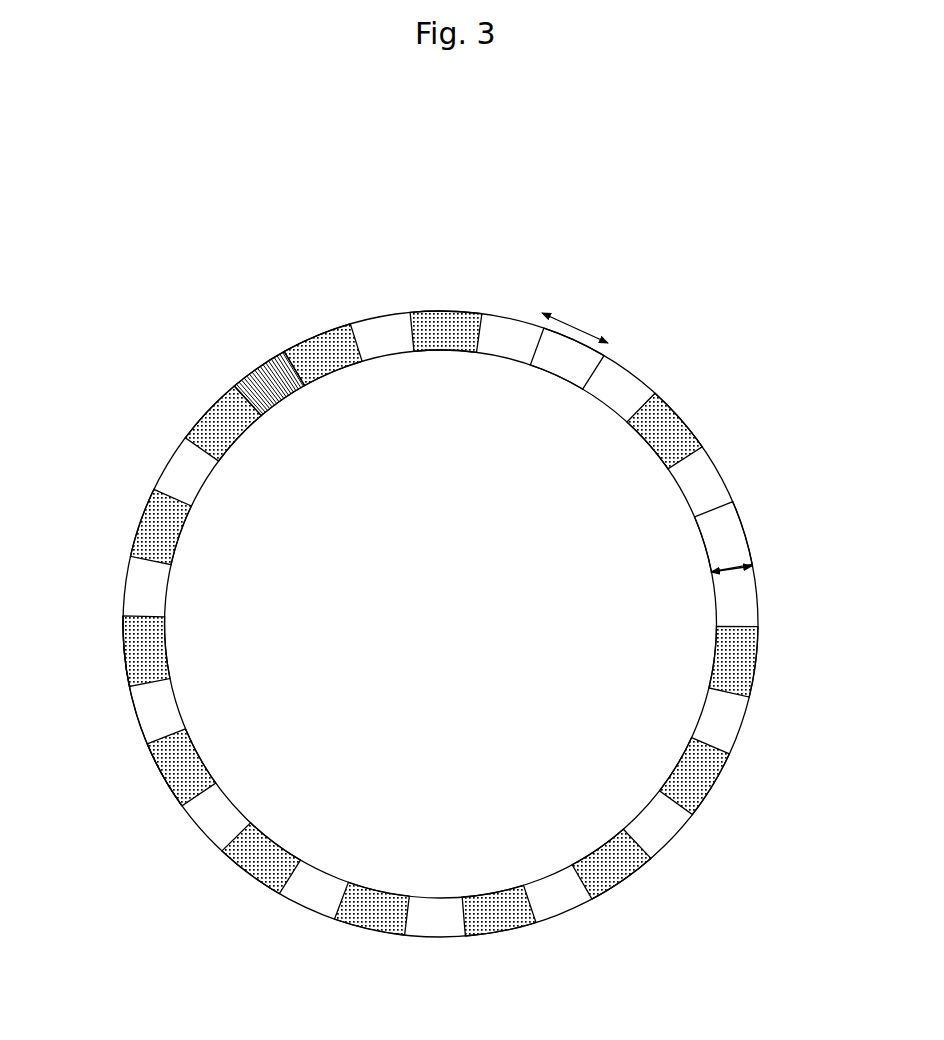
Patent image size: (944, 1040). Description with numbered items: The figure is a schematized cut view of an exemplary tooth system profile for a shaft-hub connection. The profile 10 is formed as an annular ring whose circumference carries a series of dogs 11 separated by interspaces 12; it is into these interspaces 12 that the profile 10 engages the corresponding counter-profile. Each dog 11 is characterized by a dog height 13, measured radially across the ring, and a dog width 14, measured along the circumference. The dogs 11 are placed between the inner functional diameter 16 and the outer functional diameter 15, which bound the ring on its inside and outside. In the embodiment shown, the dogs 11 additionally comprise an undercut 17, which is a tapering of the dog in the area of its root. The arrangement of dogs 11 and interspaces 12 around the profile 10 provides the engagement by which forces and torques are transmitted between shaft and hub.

The profile 10 is at (187, 478).
The dog 11 is at (443, 325).
The interspace 12 is at (262, 363).
The dog height 13 is at (752, 566).
The dog width 14 is at (575, 330).
The outer functional diameter 15 is at (205, 838).
The inner functional diameter 16 is at (383, 353).
The undercut 17 is at (713, 683).